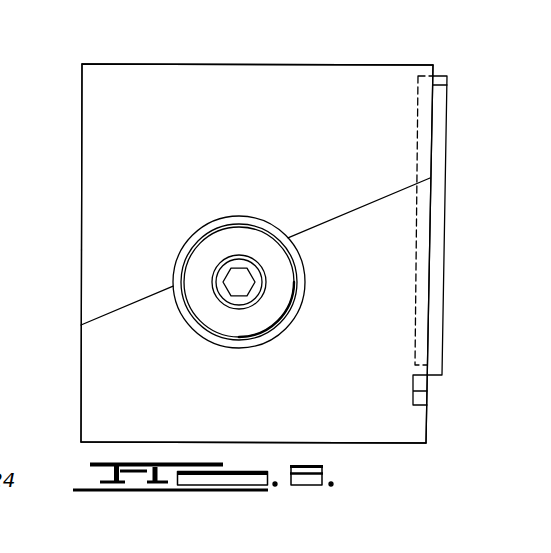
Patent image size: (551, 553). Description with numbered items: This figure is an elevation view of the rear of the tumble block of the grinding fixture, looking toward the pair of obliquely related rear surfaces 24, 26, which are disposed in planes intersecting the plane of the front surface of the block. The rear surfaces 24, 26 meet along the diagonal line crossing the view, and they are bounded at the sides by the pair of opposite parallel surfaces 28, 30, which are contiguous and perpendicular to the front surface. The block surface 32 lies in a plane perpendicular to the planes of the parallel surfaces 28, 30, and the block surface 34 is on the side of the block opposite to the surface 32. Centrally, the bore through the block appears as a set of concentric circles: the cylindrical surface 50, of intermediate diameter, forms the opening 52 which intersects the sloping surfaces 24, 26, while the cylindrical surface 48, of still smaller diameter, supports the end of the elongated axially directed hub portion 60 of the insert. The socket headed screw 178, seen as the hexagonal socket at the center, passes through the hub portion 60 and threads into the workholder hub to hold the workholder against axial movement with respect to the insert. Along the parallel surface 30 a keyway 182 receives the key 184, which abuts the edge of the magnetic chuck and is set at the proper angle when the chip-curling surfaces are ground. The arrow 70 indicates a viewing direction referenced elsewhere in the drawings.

The rear surface 24 is at (295, 68).
The rear surface 26 is at (90, 368).
The parallel surface 28 is at (80, 172).
The parallel surface 30 is at (427, 429).
The block surface 32 is at (202, 448).
The block surface 34 is at (181, 63).
The cylindrical surface 48 is at (266, 233).
The cylindrical surface 50 is at (236, 216).
The opening 52 is at (248, 250).
The hub portion 60 is at (222, 315).
The direction arrow 70 is at (78, 277).
The socket headed screw 178 is at (257, 278).
The keyway 182 is at (427, 390).
The key 184 is at (440, 133).